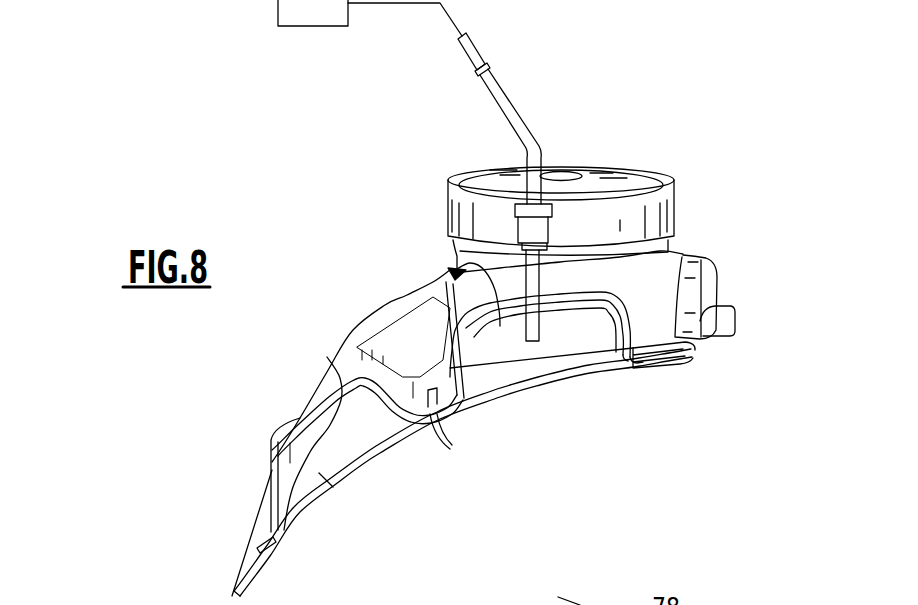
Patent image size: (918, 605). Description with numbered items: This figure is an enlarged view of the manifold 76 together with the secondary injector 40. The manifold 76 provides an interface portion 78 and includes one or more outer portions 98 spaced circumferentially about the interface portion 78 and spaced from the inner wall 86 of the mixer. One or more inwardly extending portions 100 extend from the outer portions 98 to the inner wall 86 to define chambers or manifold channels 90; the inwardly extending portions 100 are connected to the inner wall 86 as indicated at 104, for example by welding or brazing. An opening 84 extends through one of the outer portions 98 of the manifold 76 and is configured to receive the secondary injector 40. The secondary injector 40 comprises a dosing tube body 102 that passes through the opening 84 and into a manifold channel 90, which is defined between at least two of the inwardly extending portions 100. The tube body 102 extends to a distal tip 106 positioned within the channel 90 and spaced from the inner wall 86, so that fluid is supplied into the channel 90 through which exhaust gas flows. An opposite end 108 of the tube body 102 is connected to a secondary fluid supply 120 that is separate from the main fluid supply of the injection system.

The secondary injector 40 is at (523, 107).
The manifold 76 is at (606, 230).
The interface portion 78 is at (595, 172).
The opening 84 is at (559, 308).
The inner wall 86 is at (330, 485).
The manifold channel 90 is at (433, 283).
The outer portion 98 is at (466, 257).
The inwardly extending portion 100 is at (270, 503).
The dosing tube body 102 is at (500, 110).
The attachment 104 is at (276, 548).
The distal tip 106 is at (531, 345).
The opposite end 108 is at (463, 42).
The secondary fluid supply 120 is at (333, 9).